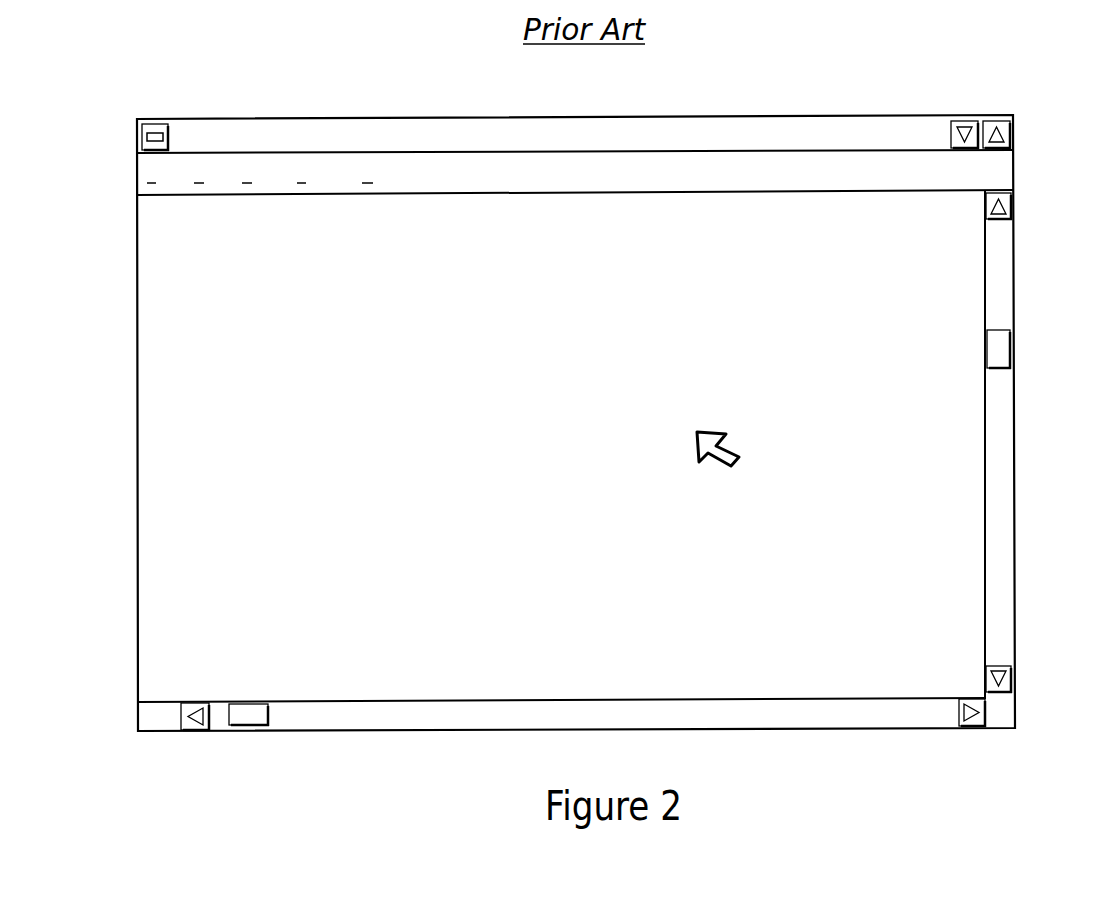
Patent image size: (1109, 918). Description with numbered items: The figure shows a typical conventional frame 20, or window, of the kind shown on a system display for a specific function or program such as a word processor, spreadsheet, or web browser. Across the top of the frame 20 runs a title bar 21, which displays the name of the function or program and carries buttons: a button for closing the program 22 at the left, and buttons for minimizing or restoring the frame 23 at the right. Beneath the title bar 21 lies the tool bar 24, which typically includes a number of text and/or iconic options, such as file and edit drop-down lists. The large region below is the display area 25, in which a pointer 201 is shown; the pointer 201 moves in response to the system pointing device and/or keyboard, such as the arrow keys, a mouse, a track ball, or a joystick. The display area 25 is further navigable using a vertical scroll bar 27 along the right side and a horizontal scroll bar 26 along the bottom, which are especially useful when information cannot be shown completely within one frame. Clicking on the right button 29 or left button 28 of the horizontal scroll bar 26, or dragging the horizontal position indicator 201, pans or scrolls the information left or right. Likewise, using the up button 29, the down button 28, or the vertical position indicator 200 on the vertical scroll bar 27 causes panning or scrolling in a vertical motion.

The frame 20 is at (136, 320).
The title bar 21 is at (402, 134).
The button for closing the program 22 is at (157, 124).
The buttons for minimizing or restoring the frame 23 is at (980, 117).
The tool bar 24 is at (458, 165).
The display area 25 is at (182, 414).
The horizontal scroll bar 26 is at (395, 732).
The vertical scroll bar 27 is at (1015, 470).
The left button / down button 28 is at (1012, 680).
The right button / up button 29 is at (1012, 205).
The vertical position indicator 200 is at (1000, 352).
The pointer / horizontal position indicator 201 is at (722, 445).